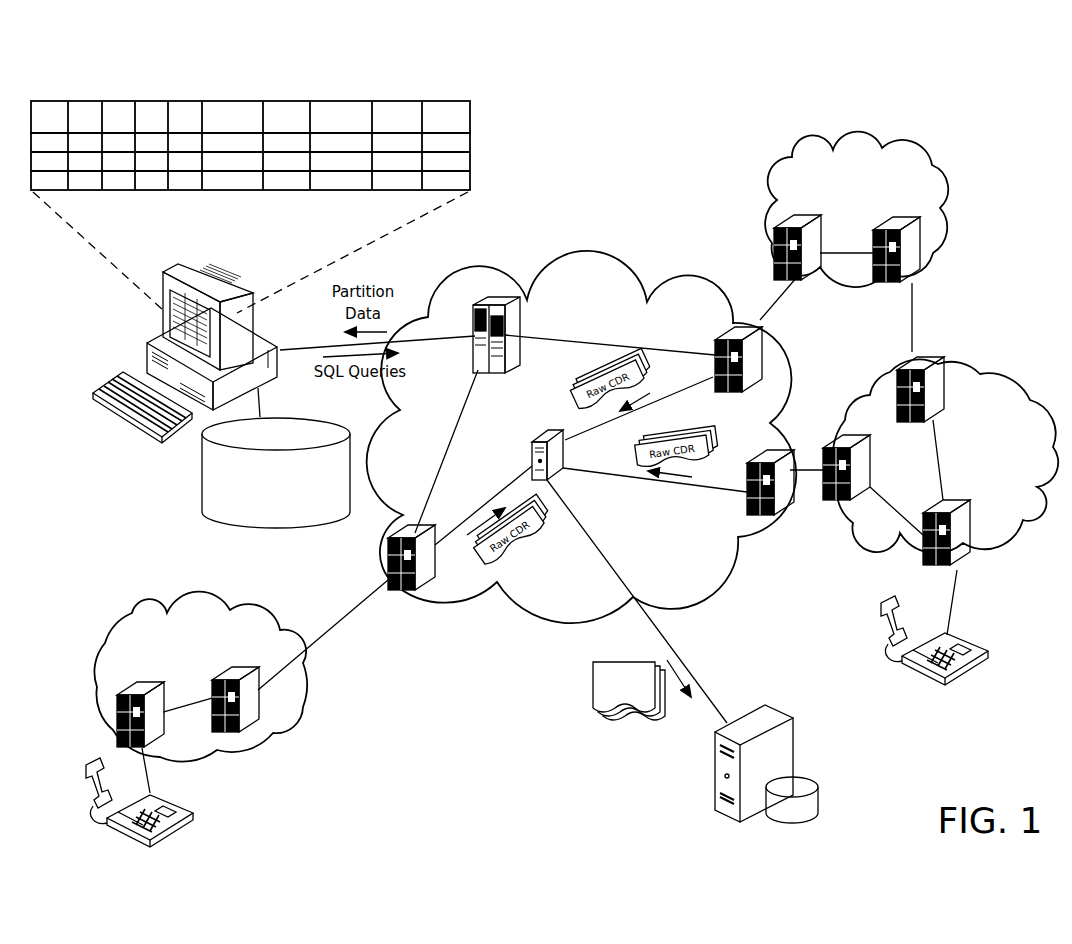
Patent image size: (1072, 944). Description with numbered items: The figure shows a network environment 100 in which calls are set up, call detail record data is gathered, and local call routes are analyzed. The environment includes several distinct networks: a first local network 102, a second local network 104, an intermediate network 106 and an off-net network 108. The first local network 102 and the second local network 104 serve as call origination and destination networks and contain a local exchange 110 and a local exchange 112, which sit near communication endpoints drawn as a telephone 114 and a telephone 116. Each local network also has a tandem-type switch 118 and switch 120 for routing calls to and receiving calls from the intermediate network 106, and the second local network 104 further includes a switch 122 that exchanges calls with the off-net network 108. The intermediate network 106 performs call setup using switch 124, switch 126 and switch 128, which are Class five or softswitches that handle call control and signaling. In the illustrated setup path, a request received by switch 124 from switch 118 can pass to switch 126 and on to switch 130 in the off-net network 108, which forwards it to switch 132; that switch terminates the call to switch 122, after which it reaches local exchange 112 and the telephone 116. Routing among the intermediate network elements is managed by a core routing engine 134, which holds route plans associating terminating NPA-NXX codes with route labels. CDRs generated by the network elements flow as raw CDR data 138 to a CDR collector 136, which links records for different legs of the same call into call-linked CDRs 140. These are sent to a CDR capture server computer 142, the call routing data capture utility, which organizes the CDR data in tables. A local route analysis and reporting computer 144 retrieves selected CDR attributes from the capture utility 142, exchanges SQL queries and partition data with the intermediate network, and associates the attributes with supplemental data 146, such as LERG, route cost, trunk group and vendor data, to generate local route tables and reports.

The network environment 100 is at (977, 152).
The first local network 102 is at (200, 677).
The second local network 104 is at (946, 456).
The intermediate network 106 is at (582, 437).
The off-net network 108 is at (856, 209).
The local exchange 110 is at (120, 700).
The local exchange 112 is at (963, 552).
The telephone 114 is at (172, 800).
The telephone 116 is at (968, 668).
The switch 118 is at (243, 680).
The switch 120 is at (848, 450).
The switch 122 is at (920, 365).
The switch 124 is at (412, 594).
The switch 126 is at (737, 332).
The switch 128 is at (762, 455).
The switch 130 is at (776, 228).
The switch 132 is at (913, 258).
The core routing engine 134 is at (490, 293).
The CDR collector 136 is at (532, 460).
The raw CDR data 138 is at (598, 375).
The call-linked CDRs 140 is at (593, 690).
The CDR capture server computer 142 is at (715, 790).
The local route analysis and reporting computer 144 is at (145, 343).
The supplemental data 146 is at (220, 192).